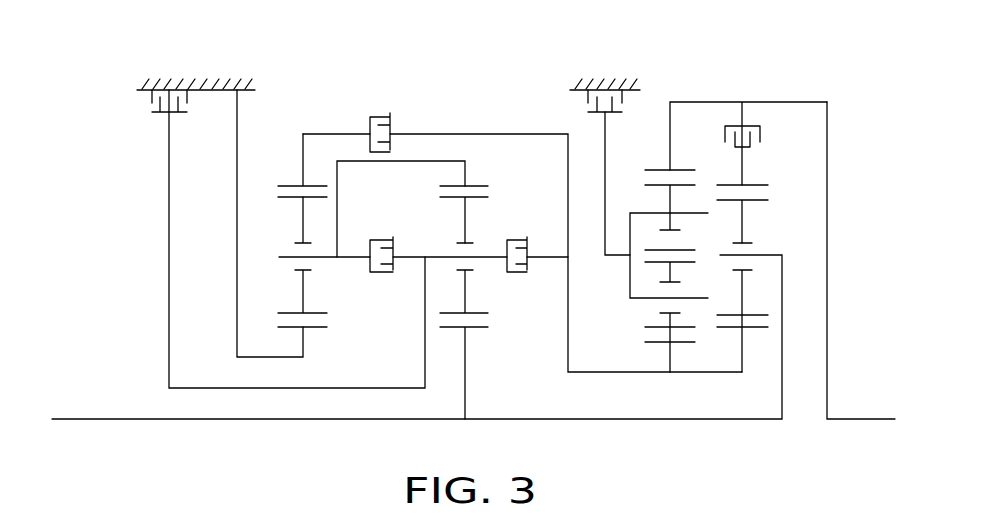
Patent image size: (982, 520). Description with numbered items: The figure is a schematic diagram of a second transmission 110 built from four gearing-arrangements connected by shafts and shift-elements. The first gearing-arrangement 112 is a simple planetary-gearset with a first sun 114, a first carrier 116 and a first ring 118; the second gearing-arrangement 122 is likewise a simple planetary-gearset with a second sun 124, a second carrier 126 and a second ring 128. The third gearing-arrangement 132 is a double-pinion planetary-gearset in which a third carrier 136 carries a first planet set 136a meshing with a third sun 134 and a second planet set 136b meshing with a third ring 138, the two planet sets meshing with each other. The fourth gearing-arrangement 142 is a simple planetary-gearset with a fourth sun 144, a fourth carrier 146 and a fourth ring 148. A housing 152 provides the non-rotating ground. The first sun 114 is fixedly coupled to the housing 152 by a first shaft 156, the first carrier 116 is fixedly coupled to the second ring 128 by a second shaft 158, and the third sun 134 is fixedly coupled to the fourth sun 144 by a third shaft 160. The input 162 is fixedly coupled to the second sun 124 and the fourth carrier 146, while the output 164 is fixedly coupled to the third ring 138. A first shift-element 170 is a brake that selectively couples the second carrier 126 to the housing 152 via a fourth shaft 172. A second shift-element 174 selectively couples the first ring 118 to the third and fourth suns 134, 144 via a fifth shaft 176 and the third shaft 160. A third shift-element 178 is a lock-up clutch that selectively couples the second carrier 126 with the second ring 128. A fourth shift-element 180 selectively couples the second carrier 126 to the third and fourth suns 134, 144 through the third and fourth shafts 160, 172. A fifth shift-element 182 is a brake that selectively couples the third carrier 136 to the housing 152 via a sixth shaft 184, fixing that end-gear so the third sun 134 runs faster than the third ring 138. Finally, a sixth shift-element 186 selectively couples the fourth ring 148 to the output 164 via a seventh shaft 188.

The second transmission 110 is at (130, 58).
The first gearing-arrangement 112 is at (302, 123).
The first sun 114 is at (303, 355).
The first carrier 116 is at (288, 245).
The first ring 118 is at (303, 172).
The second gearing-arrangement 122 is at (474, 376).
The second sun 124 is at (467, 362).
The second carrier 126 is at (447, 245).
The second ring 128 is at (468, 178).
The third gearing-arrangement 132 is at (664, 410).
The third sun 134 is at (668, 365).
The third carrier 136 is at (622, 277).
The first planet set 136a is at (672, 268).
The second planet set 136b is at (663, 197).
The third ring 138 is at (670, 128).
The fourth gearing-arrangement 142 is at (744, 410).
The fourth sun 144 is at (742, 365).
The fourth carrier 146 is at (768, 245).
The fourth ring 148 is at (755, 178).
The housing 152 is at (217, 87).
The first shaft 156 is at (237, 240).
The second shaft 158 is at (357, 162).
The third shaft 160 is at (620, 372).
The input 162 is at (280, 420).
The output 164 is at (827, 262).
The first shift-element 170 is at (153, 113).
The fourth shaft 172 is at (169, 260).
The second shift-element 174 is at (392, 117).
The fifth shaft 176 is at (320, 134).
The third shift-element 178 is at (393, 262).
The fourth shift-element 180 is at (527, 262).
The fifth shift-element 182 is at (590, 112).
The sixth shaft 184 is at (605, 208).
The sixth shift-element 186 is at (733, 126).
The seventh shaft 188 is at (742, 165).